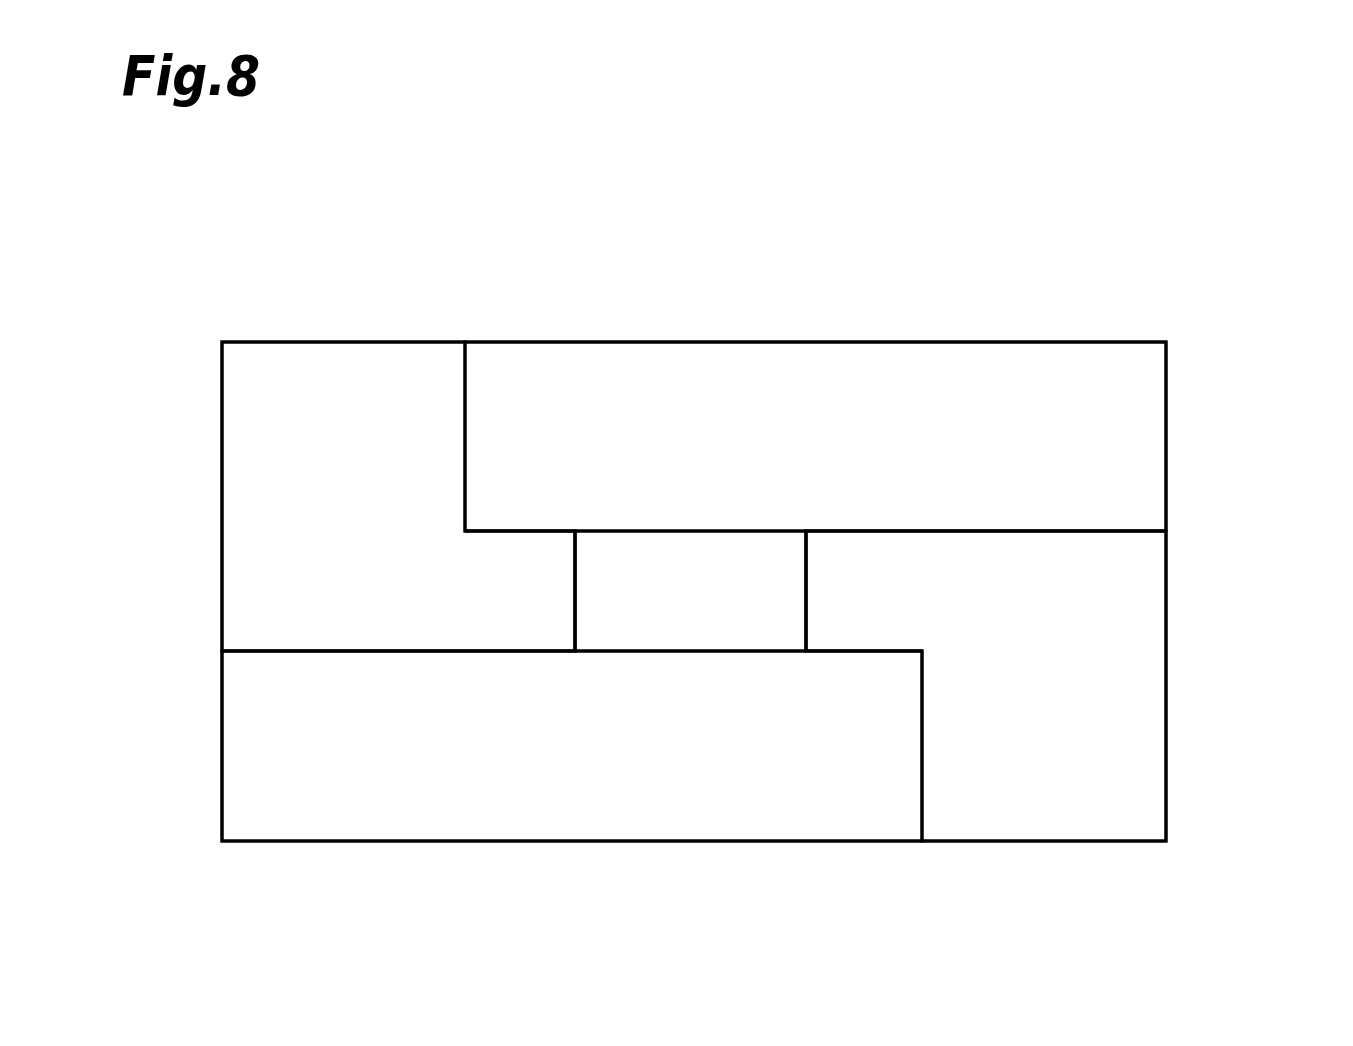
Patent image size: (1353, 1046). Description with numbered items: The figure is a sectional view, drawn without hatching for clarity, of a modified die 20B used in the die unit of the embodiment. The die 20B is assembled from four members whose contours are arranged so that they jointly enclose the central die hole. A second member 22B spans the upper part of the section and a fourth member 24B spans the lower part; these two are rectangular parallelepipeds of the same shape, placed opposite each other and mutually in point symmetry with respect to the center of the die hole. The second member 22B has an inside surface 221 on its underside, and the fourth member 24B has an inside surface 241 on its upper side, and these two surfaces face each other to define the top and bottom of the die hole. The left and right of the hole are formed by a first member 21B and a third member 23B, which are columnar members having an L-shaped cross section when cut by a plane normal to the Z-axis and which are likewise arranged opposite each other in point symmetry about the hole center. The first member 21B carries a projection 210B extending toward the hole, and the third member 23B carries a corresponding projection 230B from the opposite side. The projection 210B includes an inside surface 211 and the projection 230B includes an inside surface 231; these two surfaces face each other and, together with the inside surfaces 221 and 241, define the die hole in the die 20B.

The die 20B is at (1033, 215).
The first member 21B is at (252, 432).
The projection 210B is at (535, 585).
The inside surface 211 is at (577, 577).
The second member 22B is at (660, 352).
The inside surface 221 is at (653, 534).
The third member 23B is at (1147, 673).
The projection 230B is at (838, 588).
The inside surface 231 is at (805, 572).
The fourth member 24B is at (637, 808).
The inside surface 241 is at (720, 648).